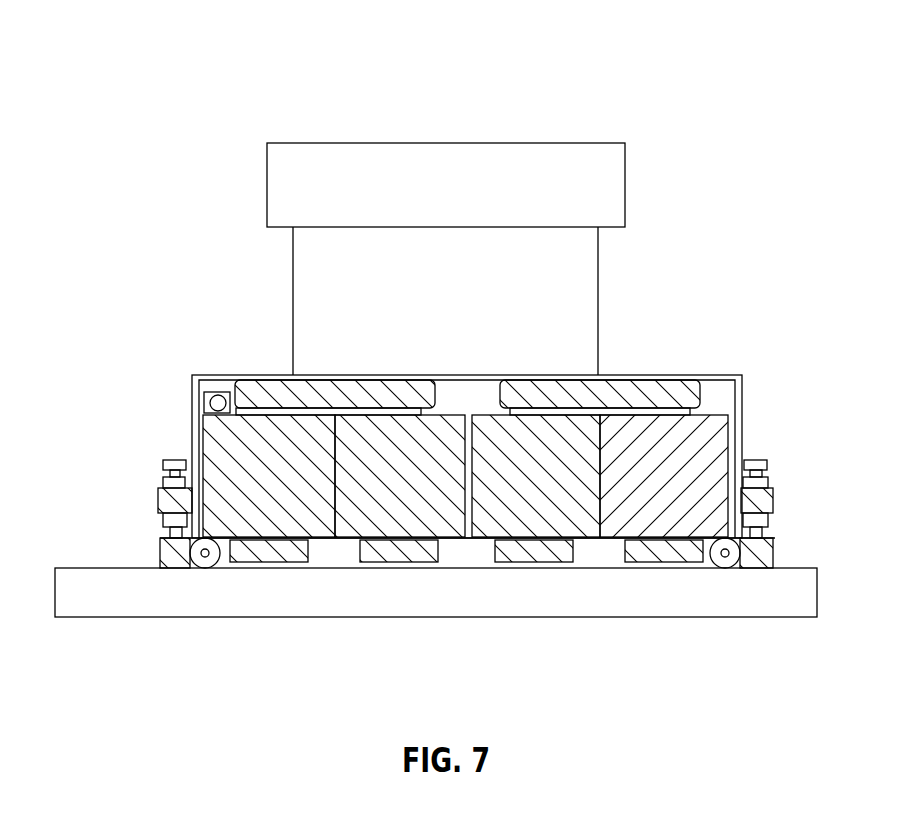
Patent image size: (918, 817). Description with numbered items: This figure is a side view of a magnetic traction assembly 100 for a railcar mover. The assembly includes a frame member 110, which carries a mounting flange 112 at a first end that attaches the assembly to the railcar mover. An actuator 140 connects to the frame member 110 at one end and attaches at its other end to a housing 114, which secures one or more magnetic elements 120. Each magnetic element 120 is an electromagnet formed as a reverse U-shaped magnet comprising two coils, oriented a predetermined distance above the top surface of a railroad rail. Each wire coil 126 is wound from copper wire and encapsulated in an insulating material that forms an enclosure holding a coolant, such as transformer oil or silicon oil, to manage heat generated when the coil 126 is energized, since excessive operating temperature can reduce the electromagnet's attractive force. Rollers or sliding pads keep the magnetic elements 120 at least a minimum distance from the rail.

The magnetic traction assembly 100 is at (268, 102).
The frame member 110 is at (278, 218).
The mounting flange 112 is at (557, 170).
The housing 114 is at (198, 385).
The magnetic element 120 is at (253, 557).
The wire coil 126 is at (718, 430).
The actuator 140 is at (315, 307).